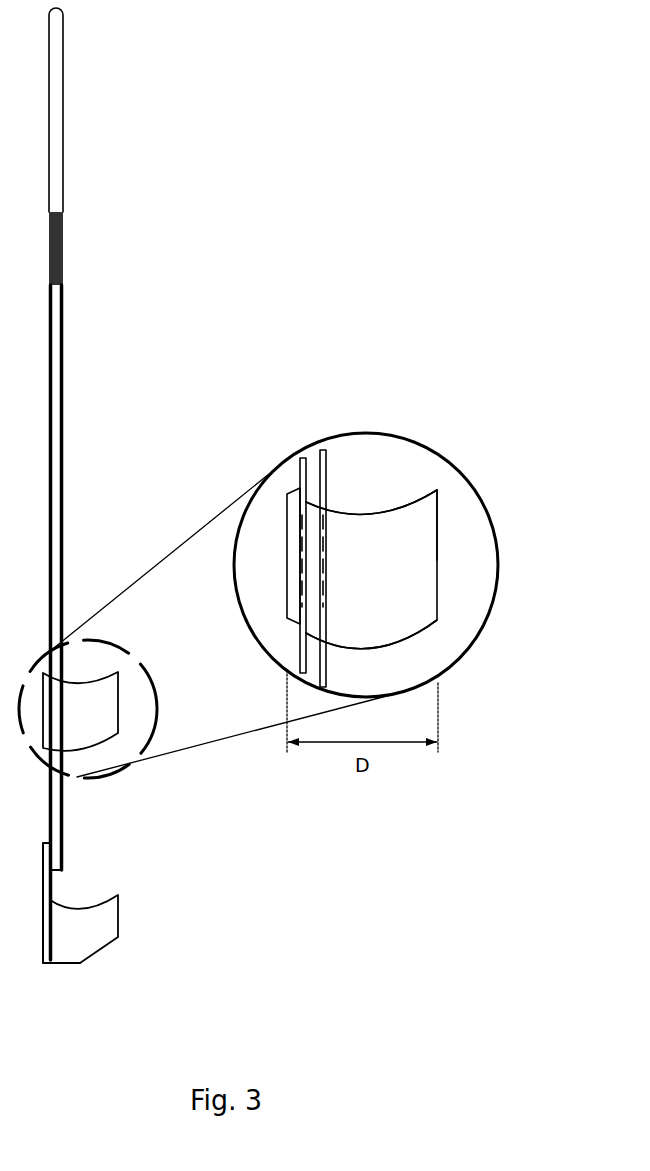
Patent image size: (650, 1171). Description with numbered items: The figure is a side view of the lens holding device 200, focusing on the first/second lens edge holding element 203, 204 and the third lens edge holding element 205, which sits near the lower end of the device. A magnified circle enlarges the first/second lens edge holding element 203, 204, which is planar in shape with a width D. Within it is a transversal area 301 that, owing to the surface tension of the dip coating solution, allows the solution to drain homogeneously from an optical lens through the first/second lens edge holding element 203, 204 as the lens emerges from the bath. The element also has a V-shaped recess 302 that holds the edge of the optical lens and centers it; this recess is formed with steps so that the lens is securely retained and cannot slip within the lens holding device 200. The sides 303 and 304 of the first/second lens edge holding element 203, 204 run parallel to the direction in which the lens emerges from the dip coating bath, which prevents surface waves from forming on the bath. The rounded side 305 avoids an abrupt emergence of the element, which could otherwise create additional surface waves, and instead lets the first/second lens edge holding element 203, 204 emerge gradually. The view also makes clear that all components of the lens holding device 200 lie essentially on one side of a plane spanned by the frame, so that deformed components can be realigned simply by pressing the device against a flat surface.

The lens holding device 200 is at (113, 92).
The first lens edge holding element 203 is at (165, 741).
The second lens edge holding element 204 is at (104, 729).
The third lens edge holding element 205 is at (104, 925).
The transversal area 301 is at (409, 564).
The V-shaped recess 302 is at (373, 507).
The side 303 is at (440, 502).
The side 304 is at (286, 547).
The rounded side 305 is at (385, 646).